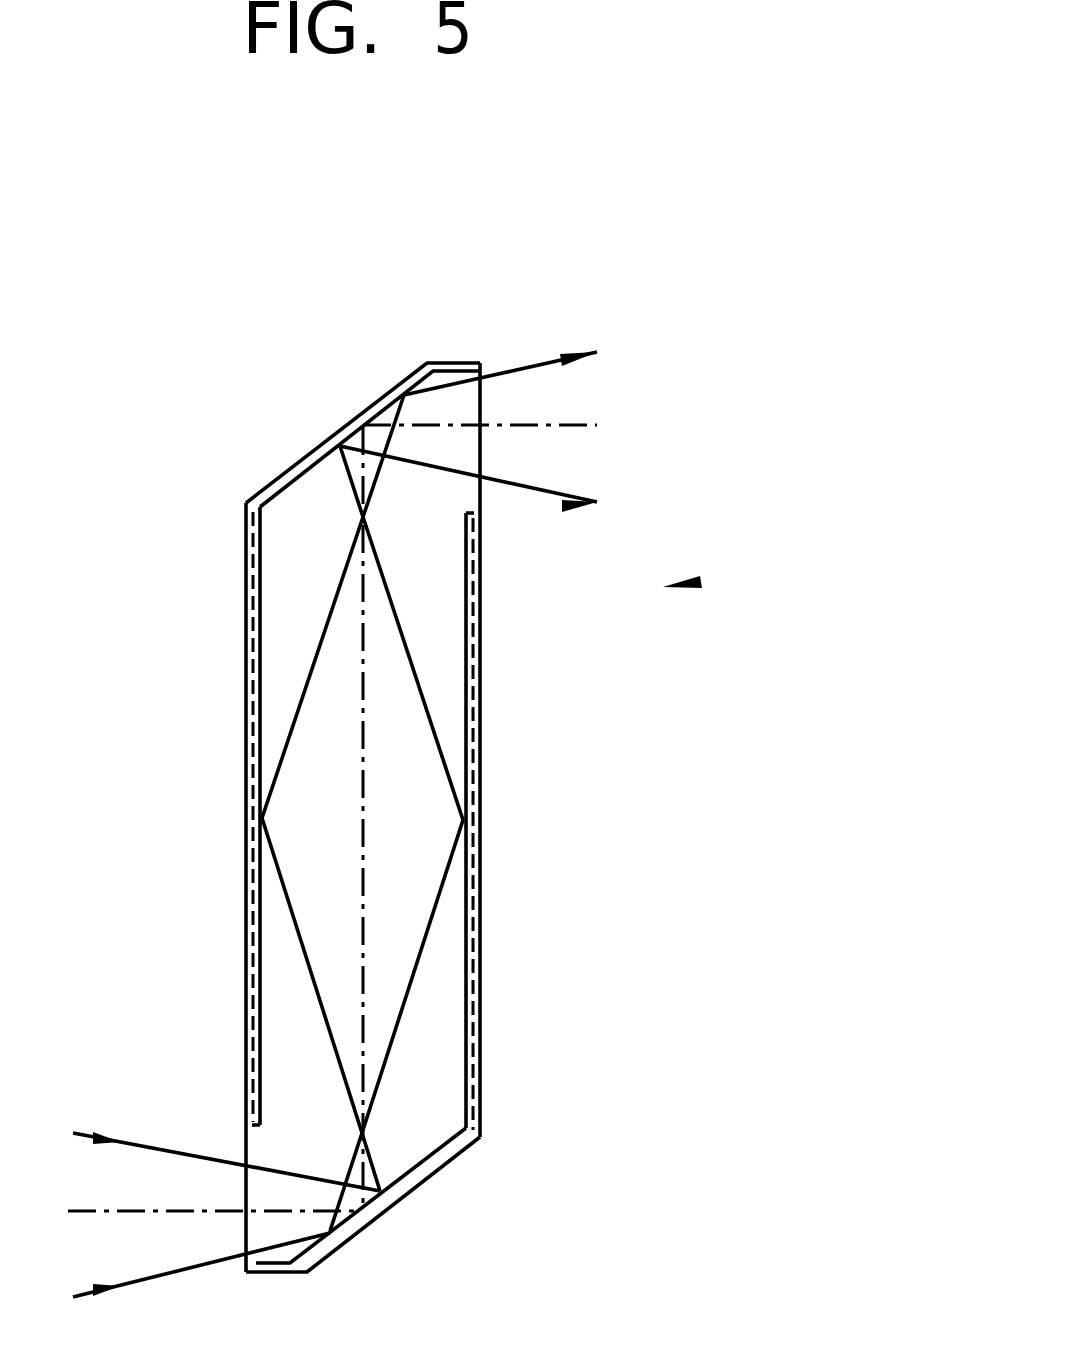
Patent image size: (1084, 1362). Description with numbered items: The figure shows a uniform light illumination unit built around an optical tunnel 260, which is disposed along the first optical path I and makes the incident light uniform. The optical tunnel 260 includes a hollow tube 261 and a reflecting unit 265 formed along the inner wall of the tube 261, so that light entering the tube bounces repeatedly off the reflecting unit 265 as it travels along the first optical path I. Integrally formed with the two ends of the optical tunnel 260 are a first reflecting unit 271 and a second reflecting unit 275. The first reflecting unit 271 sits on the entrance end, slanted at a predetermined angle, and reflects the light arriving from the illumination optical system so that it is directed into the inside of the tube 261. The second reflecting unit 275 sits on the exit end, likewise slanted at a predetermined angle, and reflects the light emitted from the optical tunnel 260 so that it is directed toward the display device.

The optical tunnel 260 is at (512, 799).
The hollow tube 261 is at (480, 760).
The reflecting unit 265 is at (463, 921).
The first reflecting unit 271 is at (413, 1187).
The second reflecting unit 275 is at (305, 459).
The first optical path I is at (363, 877).